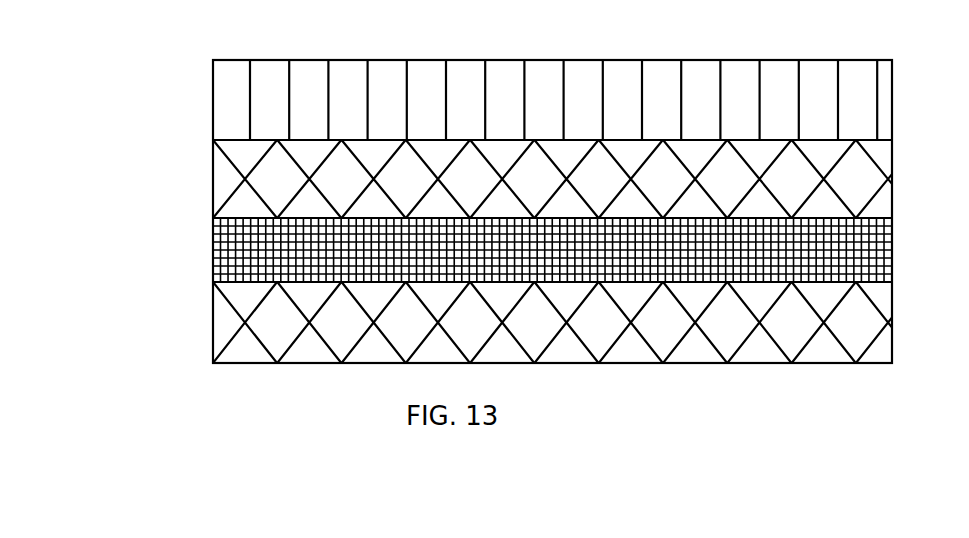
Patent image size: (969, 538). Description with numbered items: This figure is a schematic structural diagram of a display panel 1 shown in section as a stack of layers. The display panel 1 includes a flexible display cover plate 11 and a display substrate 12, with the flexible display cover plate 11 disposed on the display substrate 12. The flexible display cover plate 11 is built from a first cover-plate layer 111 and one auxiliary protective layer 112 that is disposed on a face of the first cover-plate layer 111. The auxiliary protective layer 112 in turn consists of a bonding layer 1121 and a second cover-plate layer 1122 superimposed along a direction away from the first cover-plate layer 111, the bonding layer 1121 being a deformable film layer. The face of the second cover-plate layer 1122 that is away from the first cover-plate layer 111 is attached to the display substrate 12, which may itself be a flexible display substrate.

The display panel 1 is at (890, 32).
The flexible display cover plate 11 is at (472, 251).
The first cover-plate layer 111 is at (252, 314).
The auxiliary protective layer 112 is at (502, 211).
The bonding layer 1121 is at (252, 245).
The second cover-plate layer 1122 is at (252, 179).
The display substrate 12 is at (254, 101).